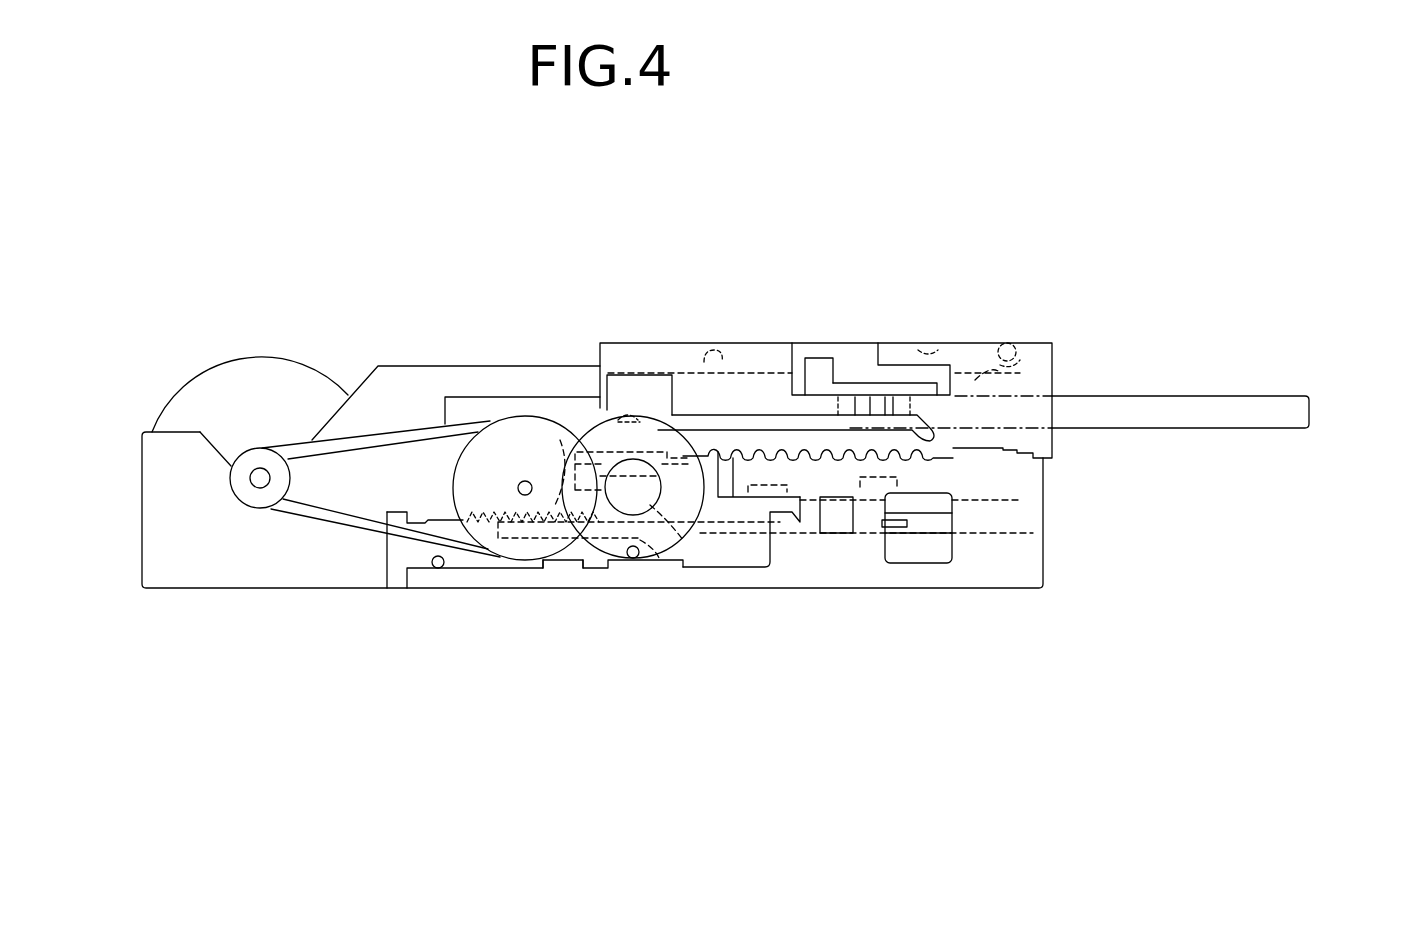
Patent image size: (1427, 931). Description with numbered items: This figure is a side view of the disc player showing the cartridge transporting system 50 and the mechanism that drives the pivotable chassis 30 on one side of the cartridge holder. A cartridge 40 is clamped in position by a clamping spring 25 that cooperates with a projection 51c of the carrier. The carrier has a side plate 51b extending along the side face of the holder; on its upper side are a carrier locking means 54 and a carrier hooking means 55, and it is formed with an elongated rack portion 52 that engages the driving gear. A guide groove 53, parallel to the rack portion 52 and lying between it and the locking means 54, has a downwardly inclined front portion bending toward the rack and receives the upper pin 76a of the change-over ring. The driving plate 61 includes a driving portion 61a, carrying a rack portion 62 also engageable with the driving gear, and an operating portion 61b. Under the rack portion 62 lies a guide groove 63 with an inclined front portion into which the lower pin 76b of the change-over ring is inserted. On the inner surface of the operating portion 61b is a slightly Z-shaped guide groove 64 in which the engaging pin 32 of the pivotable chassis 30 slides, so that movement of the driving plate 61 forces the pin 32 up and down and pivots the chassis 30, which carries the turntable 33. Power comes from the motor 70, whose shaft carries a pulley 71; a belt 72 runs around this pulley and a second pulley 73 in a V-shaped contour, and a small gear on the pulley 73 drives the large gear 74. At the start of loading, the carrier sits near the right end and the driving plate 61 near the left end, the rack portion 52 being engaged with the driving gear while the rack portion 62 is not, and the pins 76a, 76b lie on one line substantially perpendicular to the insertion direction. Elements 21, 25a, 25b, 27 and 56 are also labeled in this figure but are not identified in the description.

The rack 21 is at (1053, 408).
The clamping spring 25 is at (935, 372).
The engaging portion 25a is at (955, 360).
The engaging portion 25b is at (712, 348).
The frame 27 is at (517, 408).
The pivotable chassis 30 is at (1027, 530).
The engaging pin 32 is at (772, 533).
The turntable 33 is at (765, 470).
The cartridge 40 is at (1295, 417).
The cartridge transporting system 50 is at (1032, 338).
The side plate 51b is at (1040, 360).
The projection 51c is at (928, 348).
The elongated rack portion 52 is at (877, 465).
The guide groove 53 is at (767, 413).
The carrier locking means 54 is at (845, 395).
The carrier hooking means 55 is at (907, 402).
The projection 56 is at (826, 360).
The driving plate 61 is at (743, 562).
The driving portion 61a is at (441, 596).
The operating portion 61b is at (653, 453).
The rack portion 62 is at (550, 503).
The guide groove 63 is at (538, 540).
The guide groove 64 is at (673, 470).
The motor 70 is at (241, 377).
The pulley 71 is at (232, 488).
The belt 72 is at (300, 520).
The pulley 73 is at (513, 550).
The large gear 74 is at (655, 555).
The upper pin 76a is at (628, 416).
The lower pin 76b is at (633, 558).